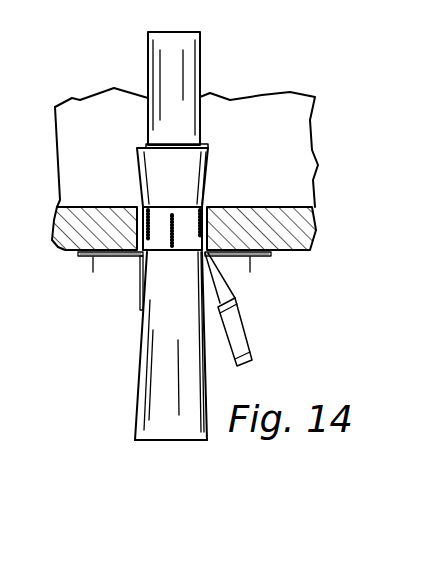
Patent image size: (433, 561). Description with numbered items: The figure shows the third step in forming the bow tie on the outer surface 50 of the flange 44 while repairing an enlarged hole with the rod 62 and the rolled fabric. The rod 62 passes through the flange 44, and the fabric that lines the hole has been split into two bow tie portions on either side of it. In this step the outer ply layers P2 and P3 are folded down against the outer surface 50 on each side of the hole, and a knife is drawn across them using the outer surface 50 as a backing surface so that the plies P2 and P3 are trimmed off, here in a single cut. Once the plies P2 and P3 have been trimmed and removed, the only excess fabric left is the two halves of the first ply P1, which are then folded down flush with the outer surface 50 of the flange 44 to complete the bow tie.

The rod 62 is at (186, 122).
The outer surface 50 is at (96, 251).
The flange 44 is at (234, 222).
The first ply P1 is at (139, 297).
The outer ply layer P2 is at (93, 272).
The outer ply layer P3 is at (74, 255).